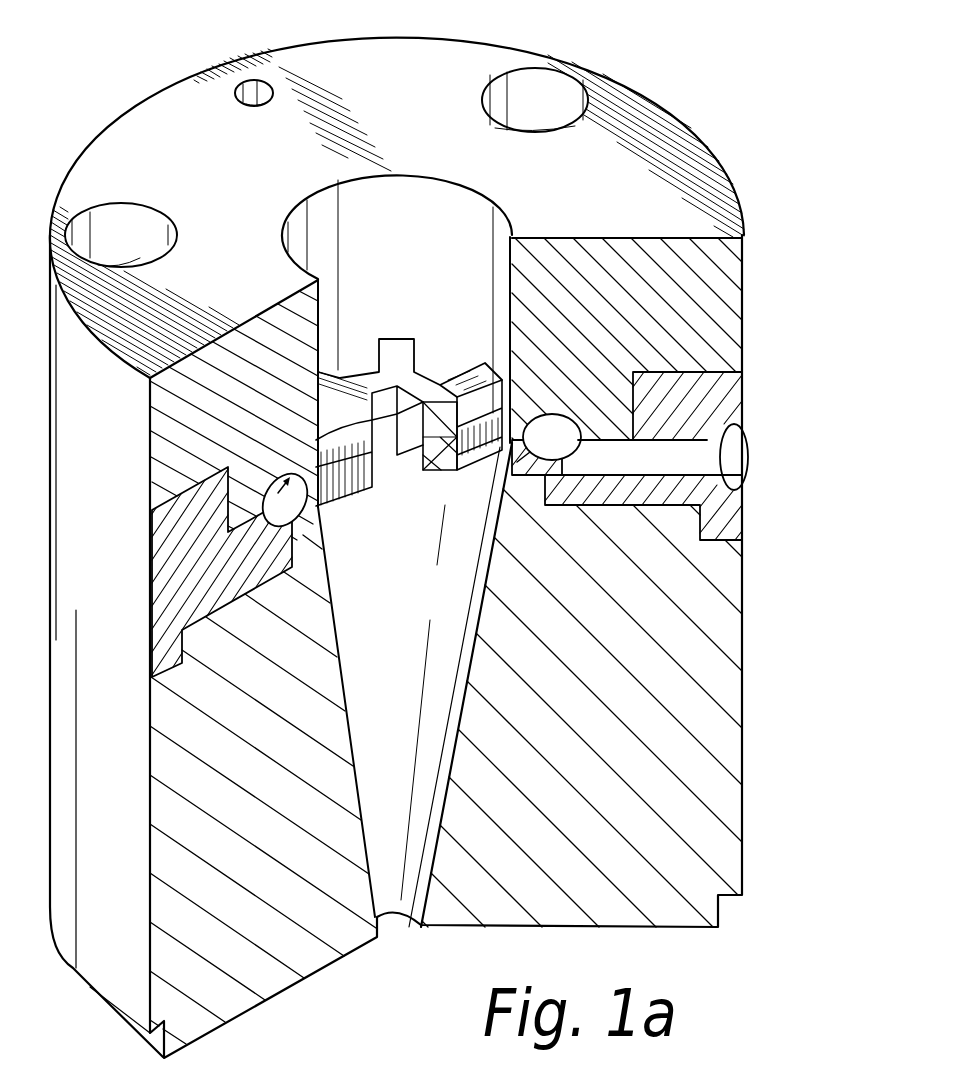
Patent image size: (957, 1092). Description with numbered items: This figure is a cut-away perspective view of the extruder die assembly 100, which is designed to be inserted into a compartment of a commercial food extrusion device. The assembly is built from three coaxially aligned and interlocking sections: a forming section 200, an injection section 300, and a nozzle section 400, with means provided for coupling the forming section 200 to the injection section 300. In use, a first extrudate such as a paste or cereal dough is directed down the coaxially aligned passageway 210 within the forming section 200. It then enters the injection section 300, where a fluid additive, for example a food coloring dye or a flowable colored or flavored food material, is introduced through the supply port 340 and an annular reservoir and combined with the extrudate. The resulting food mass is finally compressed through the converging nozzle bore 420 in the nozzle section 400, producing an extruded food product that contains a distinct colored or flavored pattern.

The extruder die assembly 100 is at (134, 77).
The forming section 200 is at (129, 418).
The passageway 210 is at (431, 283).
The injection section 300 is at (129, 564).
The supply port 340 is at (700, 458).
The nozzle section 400 is at (129, 824).
The nozzle bore 420 is at (431, 609).